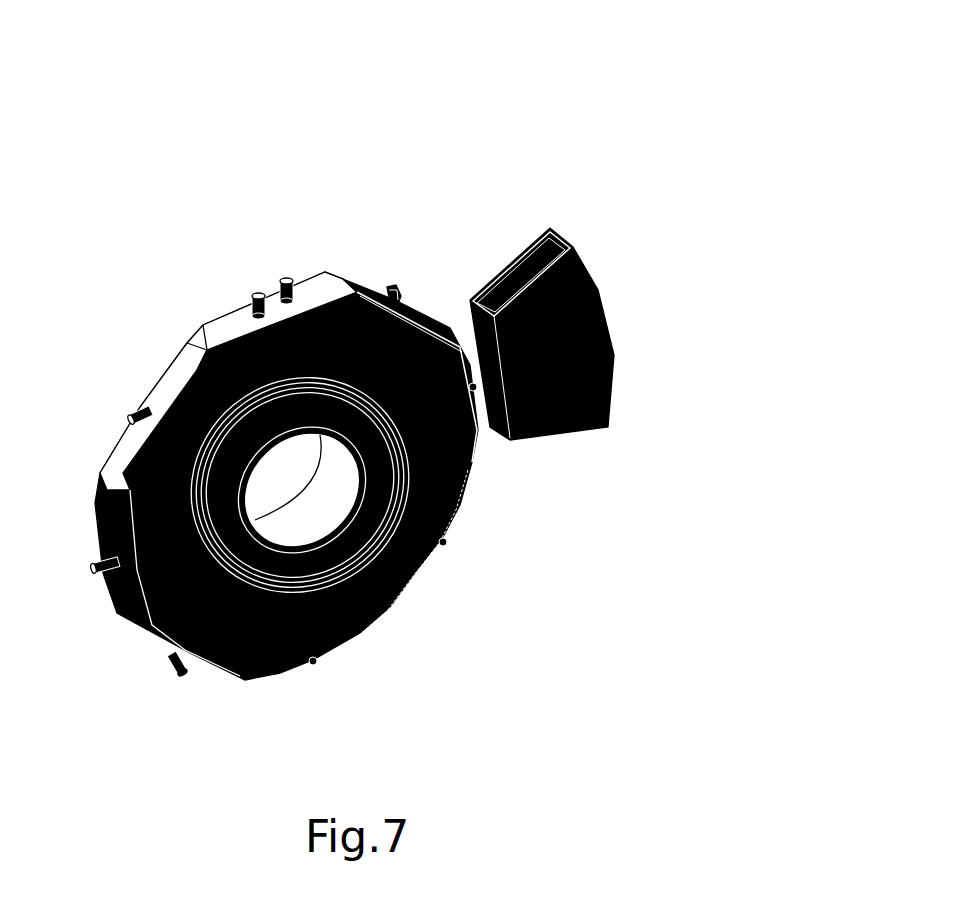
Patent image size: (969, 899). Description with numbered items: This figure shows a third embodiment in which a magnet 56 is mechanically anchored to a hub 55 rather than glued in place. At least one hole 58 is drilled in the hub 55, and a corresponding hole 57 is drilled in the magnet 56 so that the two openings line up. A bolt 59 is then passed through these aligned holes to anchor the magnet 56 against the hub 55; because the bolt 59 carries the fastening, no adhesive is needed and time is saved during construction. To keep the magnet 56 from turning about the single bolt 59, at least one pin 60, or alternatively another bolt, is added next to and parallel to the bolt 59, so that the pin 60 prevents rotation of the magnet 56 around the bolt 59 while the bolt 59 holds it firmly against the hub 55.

The hub 55 is at (427, 478).
The magnet 56 is at (590, 342).
The hole 57 is at (483, 365).
The hole 58 is at (352, 285).
The bolt 59 is at (393, 286).
The pin 60 is at (280, 285).